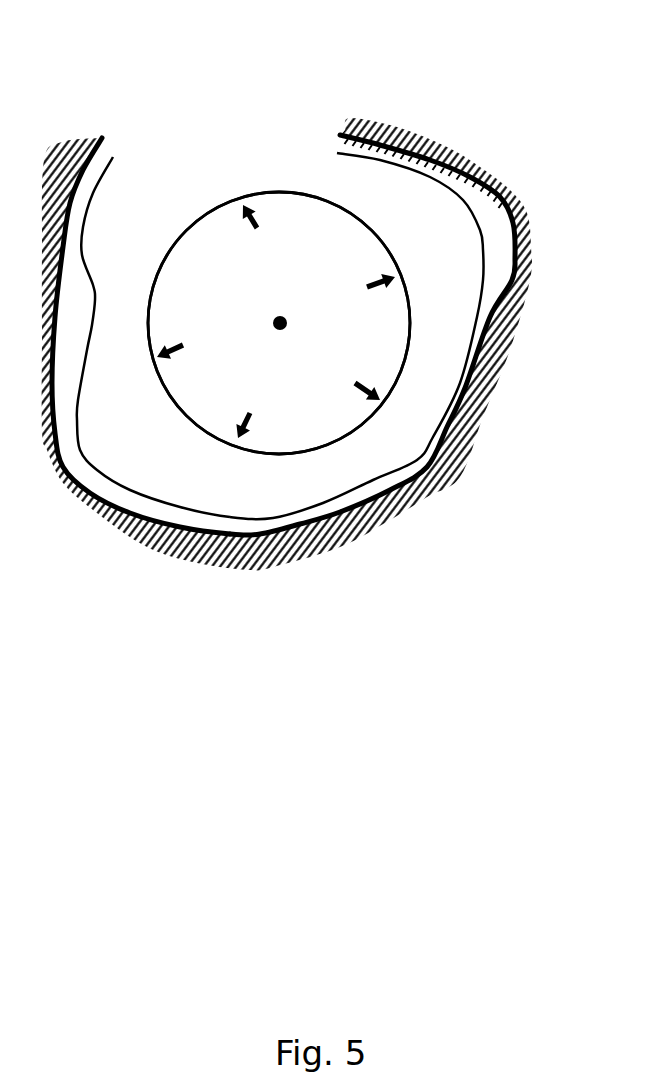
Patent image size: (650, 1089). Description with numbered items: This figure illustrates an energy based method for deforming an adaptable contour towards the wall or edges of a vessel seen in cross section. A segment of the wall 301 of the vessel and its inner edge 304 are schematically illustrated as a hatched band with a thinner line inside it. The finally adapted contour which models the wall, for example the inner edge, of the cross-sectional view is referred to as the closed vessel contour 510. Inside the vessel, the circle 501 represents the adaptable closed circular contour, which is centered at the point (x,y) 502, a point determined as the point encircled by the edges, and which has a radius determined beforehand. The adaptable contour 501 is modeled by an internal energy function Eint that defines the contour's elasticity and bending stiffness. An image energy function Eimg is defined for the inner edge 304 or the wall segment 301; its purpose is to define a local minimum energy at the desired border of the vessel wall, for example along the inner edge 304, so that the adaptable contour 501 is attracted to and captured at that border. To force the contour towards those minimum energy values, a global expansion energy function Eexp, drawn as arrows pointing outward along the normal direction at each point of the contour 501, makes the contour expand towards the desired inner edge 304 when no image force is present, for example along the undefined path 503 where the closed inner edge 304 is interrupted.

The wall of the vessel 301 is at (450, 142).
The inner edge 304 is at (398, 177).
The adaptable closed circular contour 501 is at (210, 205).
The point (x,y) 502 is at (268, 315).
The undefined path 503 is at (303, 150).
The closed vessel contour 510 is at (96, 138).
The image energy function Eimg is at (93, 203).
The global expansion energy function Eexp is at (183, 352).
The internal energy function Eint is at (162, 392).